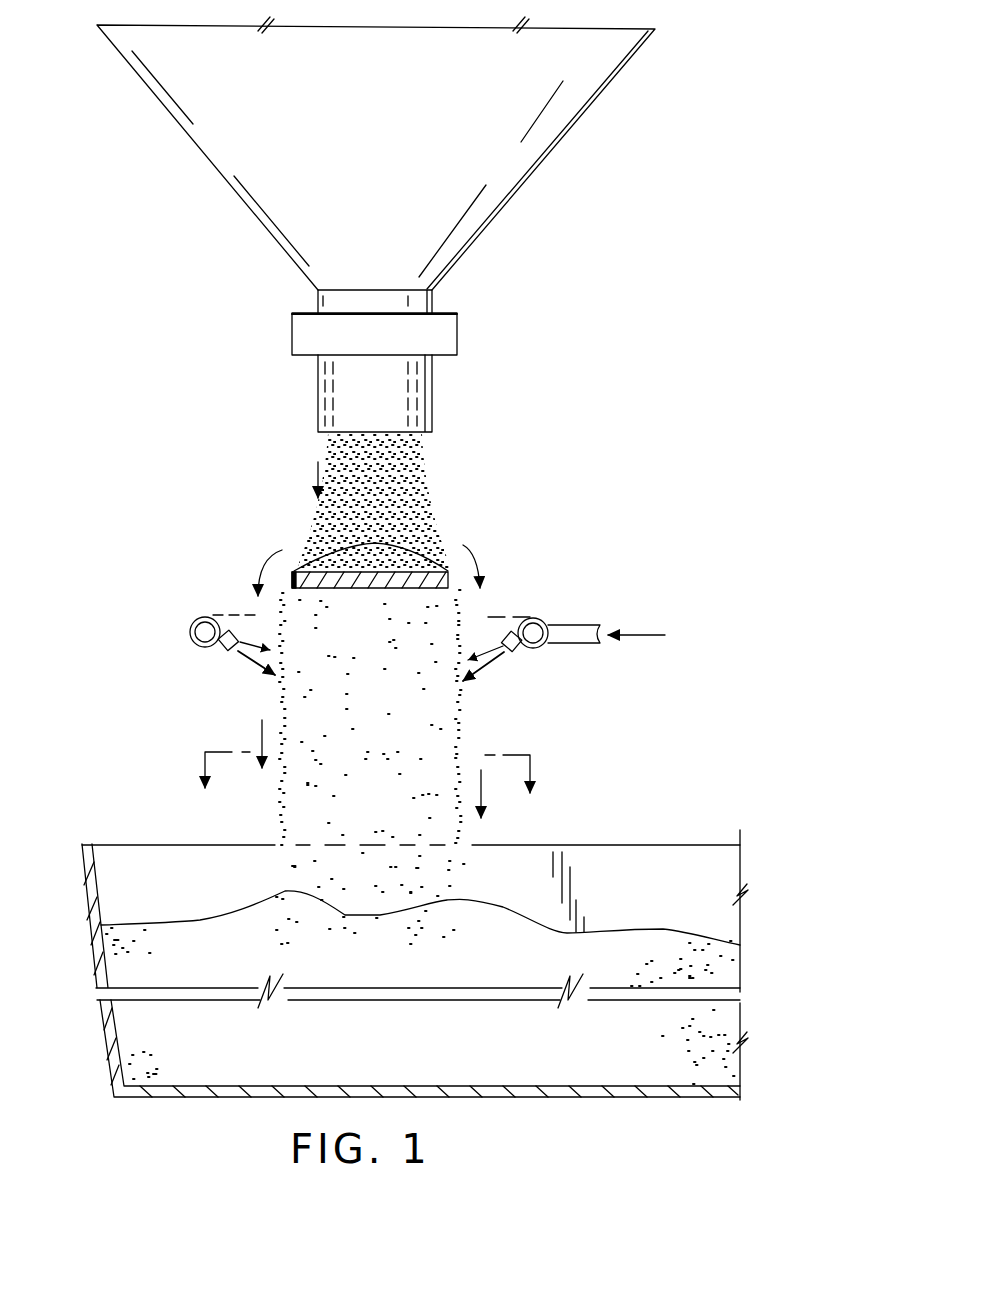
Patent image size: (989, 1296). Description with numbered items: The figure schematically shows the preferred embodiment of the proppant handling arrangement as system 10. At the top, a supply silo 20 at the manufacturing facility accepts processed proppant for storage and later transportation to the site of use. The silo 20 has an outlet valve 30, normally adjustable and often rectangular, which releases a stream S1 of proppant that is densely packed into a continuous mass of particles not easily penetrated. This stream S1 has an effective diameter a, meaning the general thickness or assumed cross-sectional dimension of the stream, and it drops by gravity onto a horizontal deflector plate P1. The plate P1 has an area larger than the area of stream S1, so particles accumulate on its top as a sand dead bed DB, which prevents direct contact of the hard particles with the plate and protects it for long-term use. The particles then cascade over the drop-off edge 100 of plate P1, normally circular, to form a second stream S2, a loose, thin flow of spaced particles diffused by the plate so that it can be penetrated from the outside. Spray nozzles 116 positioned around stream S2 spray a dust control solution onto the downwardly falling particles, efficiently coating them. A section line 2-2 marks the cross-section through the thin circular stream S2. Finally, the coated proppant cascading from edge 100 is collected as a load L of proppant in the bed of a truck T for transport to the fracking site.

The system 10 is at (692, 160).
The supply silo 20 is at (533, 176).
The outlet valve 30 is at (450, 325).
The effective diameter a is at (245, 444).
The stream S1 is at (410, 497).
The dispersion bed DB is at (398, 557).
The drop-off edge 100 is at (479, 569).
The deflector plate P1 is at (364, 593).
The spray nozzles 116 is at (227, 645).
The second stream S2 is at (470, 722).
The section line 2- 2 is at (366, 769).
The truck T is at (78, 905).
The load L is at (590, 940).